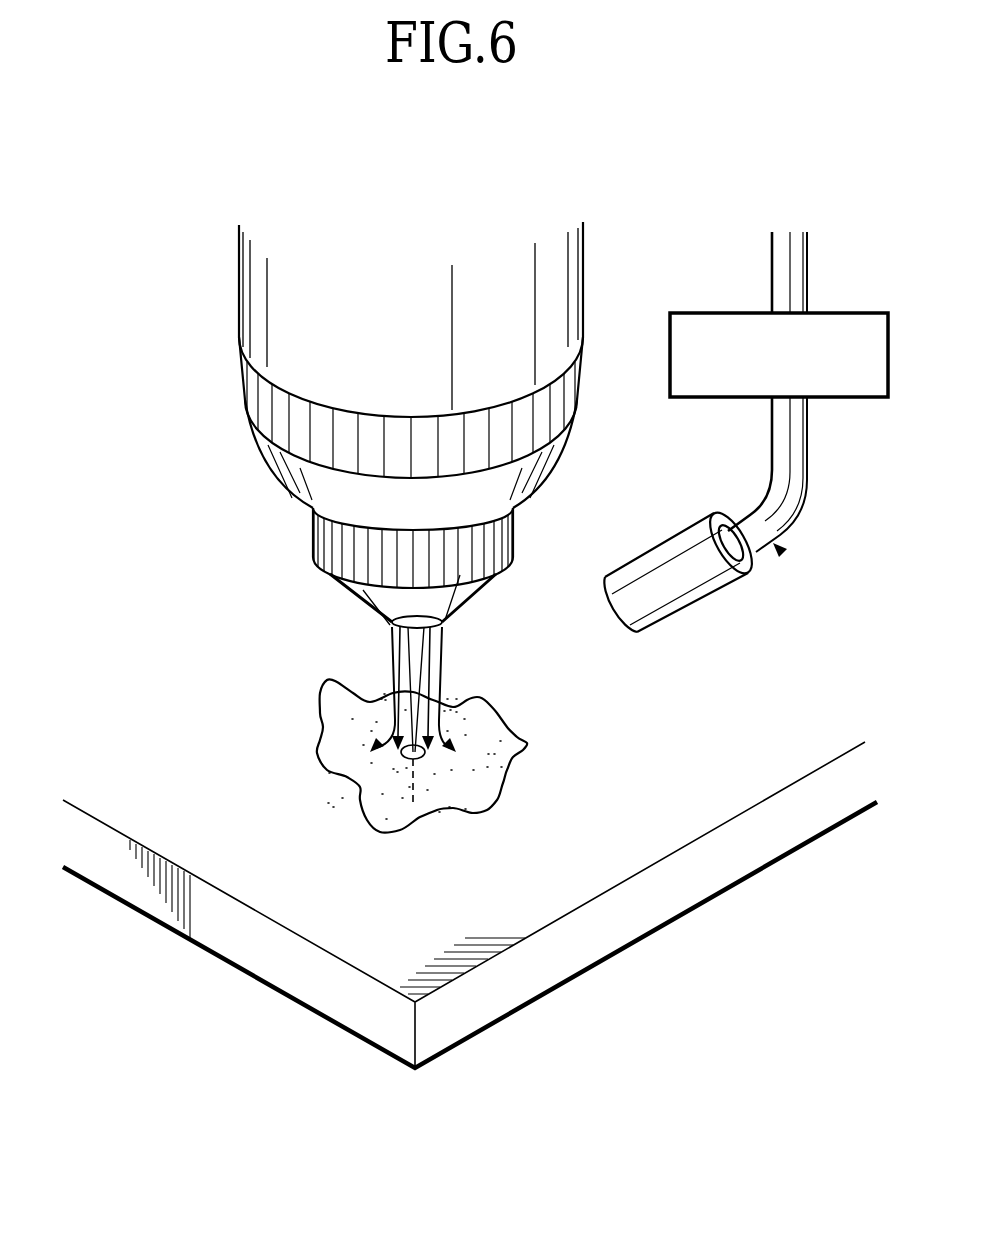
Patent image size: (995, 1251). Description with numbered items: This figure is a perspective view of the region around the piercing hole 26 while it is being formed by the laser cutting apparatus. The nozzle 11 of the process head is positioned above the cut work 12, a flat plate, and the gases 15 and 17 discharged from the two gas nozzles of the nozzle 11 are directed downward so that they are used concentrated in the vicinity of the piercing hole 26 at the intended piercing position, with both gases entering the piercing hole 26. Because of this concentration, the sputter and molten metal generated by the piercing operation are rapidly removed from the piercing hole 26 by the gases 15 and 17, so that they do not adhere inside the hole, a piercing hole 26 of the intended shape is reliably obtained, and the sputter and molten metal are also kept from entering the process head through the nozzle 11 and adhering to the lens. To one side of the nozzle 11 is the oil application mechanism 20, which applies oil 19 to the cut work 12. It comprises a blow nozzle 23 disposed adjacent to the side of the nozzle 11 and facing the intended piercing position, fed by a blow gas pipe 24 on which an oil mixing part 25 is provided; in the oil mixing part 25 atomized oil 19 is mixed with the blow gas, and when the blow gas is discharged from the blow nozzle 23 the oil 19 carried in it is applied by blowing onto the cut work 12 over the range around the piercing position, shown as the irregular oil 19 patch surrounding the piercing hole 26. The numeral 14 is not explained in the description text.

The nozzle 11 is at (313, 524).
The cut work 12 is at (527, 1005).
The inner nozzle passage 14 is at (422, 682).
The gas 15 is at (397, 673).
The gas 17 is at (438, 643).
The oil 19 is at (478, 611).
The oil application mechanism 20 is at (783, 553).
The blow nozzle 23 is at (697, 600).
The blow gas pipe 24 is at (808, 451).
The oil mixing part 25 is at (697, 312).
The piercing hole 26 is at (425, 757).